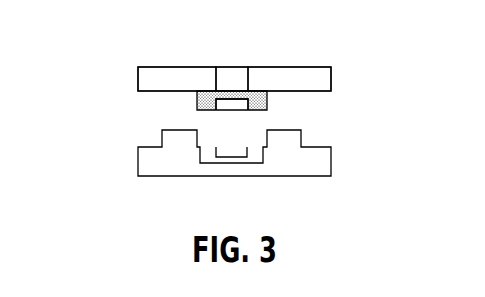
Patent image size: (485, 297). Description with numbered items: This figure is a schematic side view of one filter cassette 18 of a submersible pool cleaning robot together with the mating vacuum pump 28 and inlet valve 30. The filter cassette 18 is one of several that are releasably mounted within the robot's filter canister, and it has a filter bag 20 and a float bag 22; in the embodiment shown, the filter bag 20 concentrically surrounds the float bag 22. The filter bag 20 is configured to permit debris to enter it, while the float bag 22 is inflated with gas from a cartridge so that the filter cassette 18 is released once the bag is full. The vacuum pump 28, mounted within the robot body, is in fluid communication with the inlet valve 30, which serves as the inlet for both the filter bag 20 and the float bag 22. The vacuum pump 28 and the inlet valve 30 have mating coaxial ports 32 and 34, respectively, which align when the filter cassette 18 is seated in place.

The filter cassette 18 is at (332, 78).
The filter bag 20 is at (150, 73).
The float bag 22 is at (232, 65).
The vacuum pump 28 is at (146, 163).
The inlet valve 30 is at (197, 105).
The coaxial port 32 is at (237, 142).
The coaxial port 34 is at (230, 112).